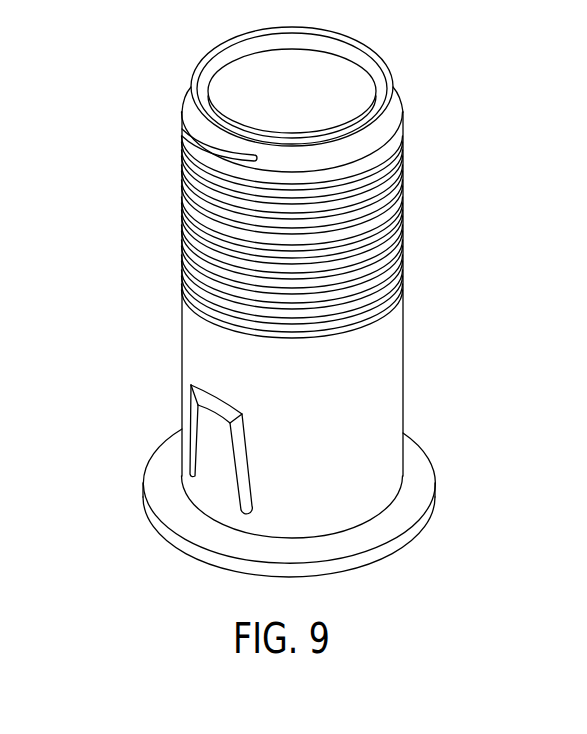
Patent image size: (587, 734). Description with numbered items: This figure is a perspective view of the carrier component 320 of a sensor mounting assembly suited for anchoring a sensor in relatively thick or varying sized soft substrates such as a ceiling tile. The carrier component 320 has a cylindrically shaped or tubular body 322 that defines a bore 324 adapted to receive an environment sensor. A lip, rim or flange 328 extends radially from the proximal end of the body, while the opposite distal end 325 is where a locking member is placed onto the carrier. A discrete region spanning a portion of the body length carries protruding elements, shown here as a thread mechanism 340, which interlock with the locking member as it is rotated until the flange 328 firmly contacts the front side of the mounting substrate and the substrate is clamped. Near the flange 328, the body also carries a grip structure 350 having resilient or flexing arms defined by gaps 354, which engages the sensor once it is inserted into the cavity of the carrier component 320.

The carrier component 320 is at (136, 337).
The tubular body 322 is at (404, 368).
The bore 324 is at (312, 105).
The distal end 325 is at (207, 63).
The flange 328 is at (437, 482).
The thread mechanism 340 is at (404, 197).
The grip structure 350 is at (212, 455).
The gaps 354 is at (247, 457).